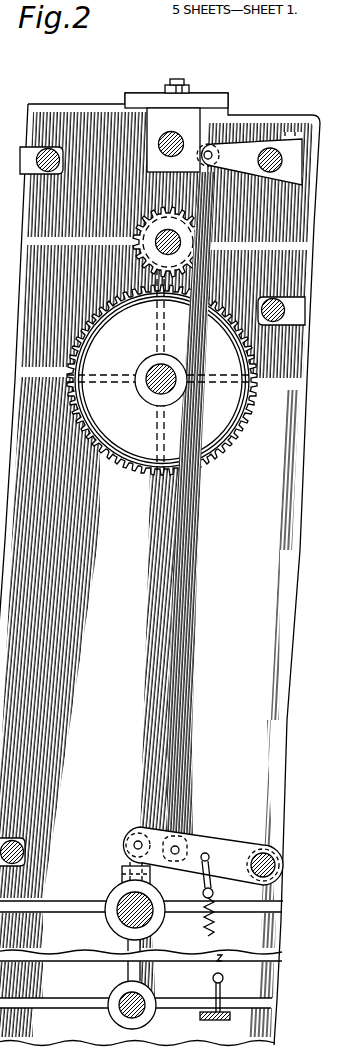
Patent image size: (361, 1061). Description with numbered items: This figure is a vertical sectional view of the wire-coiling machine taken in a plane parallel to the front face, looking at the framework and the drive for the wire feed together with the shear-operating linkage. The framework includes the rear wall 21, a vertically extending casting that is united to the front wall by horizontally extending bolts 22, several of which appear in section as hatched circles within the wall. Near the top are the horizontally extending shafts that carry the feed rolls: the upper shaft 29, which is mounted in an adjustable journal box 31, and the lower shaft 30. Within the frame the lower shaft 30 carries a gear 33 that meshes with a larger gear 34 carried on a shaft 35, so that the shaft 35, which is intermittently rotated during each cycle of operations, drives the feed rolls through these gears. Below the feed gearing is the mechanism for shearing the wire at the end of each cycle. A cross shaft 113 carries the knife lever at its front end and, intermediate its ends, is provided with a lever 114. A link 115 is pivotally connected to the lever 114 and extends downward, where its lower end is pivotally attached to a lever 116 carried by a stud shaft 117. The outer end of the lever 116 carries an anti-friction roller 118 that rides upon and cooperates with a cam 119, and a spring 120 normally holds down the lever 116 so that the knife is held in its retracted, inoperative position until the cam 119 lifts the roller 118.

The rear wall 21 is at (40, 107).
The bolts 22 is at (36, 160).
The upper shaft 29 is at (160, 136).
The lower shaft 30 is at (157, 236).
The adjustable journal box 31 is at (173, 140).
The gear 33 is at (147, 256).
The larger gear 34 is at (238, 436).
The shaft 35 is at (151, 388).
The cross shaft 113 is at (274, 149).
The lever 114 is at (237, 146).
The link 115 is at (196, 660).
The lever 116 is at (210, 836).
The stud shaft 117 is at (279, 863).
The anti-friction roller 118 is at (130, 838).
The cam 119 is at (120, 877).
The spring 120 is at (215, 933).